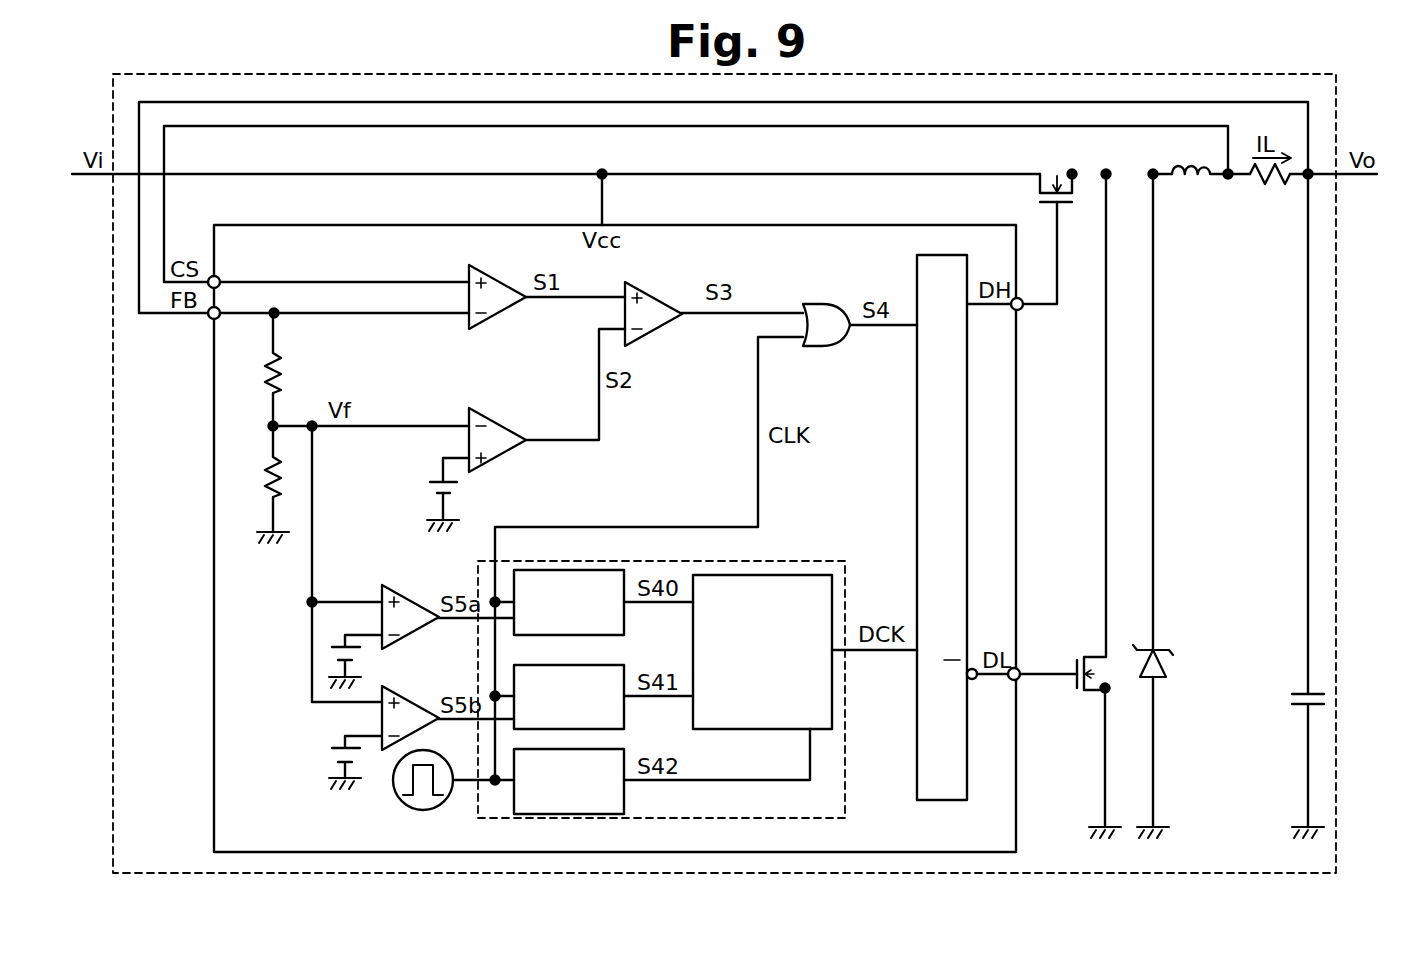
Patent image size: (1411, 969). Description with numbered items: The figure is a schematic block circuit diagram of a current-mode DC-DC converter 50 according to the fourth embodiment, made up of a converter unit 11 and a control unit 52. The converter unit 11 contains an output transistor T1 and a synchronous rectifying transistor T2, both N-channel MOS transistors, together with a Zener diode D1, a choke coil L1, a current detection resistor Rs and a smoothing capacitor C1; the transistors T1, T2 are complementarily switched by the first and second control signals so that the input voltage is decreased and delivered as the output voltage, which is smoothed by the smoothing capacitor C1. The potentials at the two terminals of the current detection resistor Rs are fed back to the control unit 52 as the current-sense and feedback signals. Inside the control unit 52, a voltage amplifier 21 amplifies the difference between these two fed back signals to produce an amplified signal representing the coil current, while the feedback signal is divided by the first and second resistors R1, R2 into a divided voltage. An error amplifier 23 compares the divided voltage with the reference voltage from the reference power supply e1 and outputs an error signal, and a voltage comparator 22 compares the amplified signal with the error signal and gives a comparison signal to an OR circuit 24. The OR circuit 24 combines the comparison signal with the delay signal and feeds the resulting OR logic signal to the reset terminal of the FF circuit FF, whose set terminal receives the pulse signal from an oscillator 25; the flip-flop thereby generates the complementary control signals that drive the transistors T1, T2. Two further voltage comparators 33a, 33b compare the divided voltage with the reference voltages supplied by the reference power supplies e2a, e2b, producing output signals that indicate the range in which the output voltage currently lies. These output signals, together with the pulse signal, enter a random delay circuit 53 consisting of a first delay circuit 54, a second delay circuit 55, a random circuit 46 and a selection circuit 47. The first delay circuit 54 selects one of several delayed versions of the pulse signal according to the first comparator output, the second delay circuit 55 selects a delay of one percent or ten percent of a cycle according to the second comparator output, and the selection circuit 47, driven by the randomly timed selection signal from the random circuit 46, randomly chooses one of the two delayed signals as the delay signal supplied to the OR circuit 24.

The DC-DC converter 50 is at (1336, 86).
The converter unit 11 is at (1022, 163).
The control unit 52 is at (945, 225).
The voltage amplifier 21 is at (492, 271).
The voltage comparator 22 is at (646, 286).
The error amplifier 23 is at (492, 412).
The OR circuit 24 is at (809, 298).
The oscillator 25 is at (396, 795).
The voltage comparator 33a is at (416, 580).
The voltage comparator 33b is at (416, 680).
The random circuit 46 is at (590, 750).
The selection circuit 47 is at (832, 584).
The random delay circuit 53 is at (822, 562).
The first delay circuit 54 is at (597, 570).
The second delay circuit 55 is at (597, 665).
The output transistor T1 is at (1052, 182).
The synchronous rectifying transistor T2 is at (1088, 656).
The Zener diode D1 is at (1162, 650).
The choke coil L1 is at (1189, 182).
The current detection resistor Rs is at (1266, 186).
The smoothing capacitor C1 is at (1300, 692).
The first resistor R1 is at (285, 365).
The second resistor R2 is at (264, 477).
The reference power supply e1 is at (430, 487).
The reference power supply e2a is at (332, 654).
The reference power supply e2b is at (332, 754).
The FF circuit FF is at (942, 527).